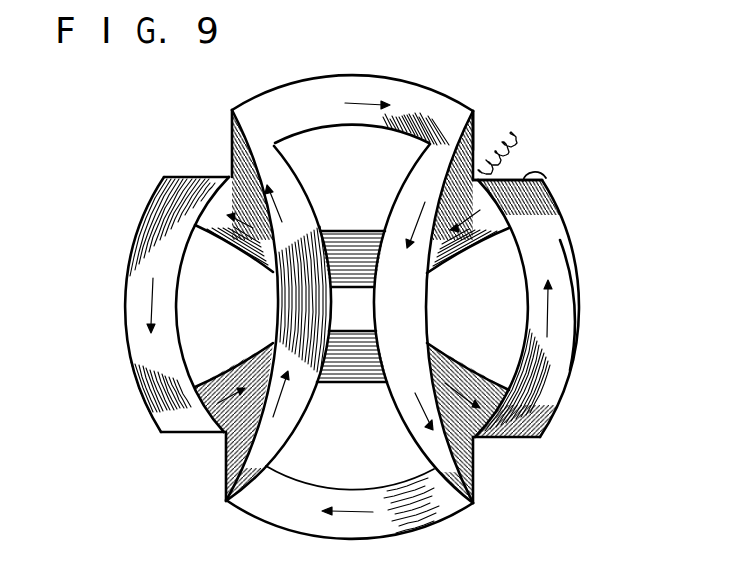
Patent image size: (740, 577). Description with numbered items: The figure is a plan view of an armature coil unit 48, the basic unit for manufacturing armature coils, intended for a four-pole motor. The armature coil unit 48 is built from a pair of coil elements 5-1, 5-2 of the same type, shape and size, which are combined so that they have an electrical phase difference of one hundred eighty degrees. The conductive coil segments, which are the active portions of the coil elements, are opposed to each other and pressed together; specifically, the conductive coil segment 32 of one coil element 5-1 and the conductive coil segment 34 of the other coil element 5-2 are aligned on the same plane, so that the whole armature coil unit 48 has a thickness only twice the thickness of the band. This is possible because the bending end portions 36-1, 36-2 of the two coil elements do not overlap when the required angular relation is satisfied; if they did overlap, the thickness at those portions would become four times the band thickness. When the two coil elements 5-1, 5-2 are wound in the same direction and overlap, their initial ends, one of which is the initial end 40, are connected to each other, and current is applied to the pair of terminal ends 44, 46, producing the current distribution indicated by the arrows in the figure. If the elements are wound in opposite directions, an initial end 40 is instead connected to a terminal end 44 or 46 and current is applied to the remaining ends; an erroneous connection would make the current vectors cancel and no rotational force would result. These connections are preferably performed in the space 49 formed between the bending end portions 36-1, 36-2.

The coil element 5-1 is at (258, 96).
The coil element 5-2 is at (578, 293).
The conductive coil segment 32 is at (343, 84).
The conductive coil segment 34 is at (408, 315).
The bending end portion 36-1 is at (475, 141).
The bending end portion 36-2 is at (544, 178).
The initial end 40 is at (517, 138).
The terminal end 44 is at (478, 111).
The terminal end 46 is at (544, 178).
The armature coil unit 48 is at (430, 84).
The space 49 is at (545, 177).